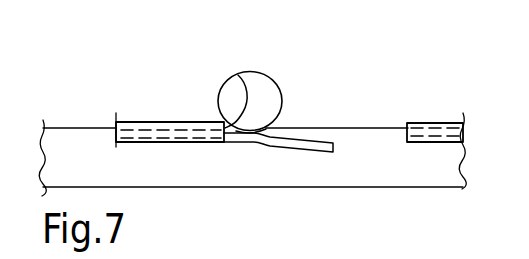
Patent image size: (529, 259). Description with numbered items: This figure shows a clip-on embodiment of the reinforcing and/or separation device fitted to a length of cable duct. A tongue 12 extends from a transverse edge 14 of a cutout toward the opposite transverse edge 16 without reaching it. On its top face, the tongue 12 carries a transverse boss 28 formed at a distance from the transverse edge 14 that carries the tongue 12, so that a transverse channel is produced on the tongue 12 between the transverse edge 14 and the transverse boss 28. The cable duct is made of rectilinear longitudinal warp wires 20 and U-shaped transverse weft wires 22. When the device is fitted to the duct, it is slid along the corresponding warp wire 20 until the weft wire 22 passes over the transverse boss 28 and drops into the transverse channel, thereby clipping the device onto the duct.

The tongue 12 is at (292, 137).
The transverse edge 14 is at (238, 75).
The opposite transverse edge 16 is at (407, 133).
The warp wire 20 is at (357, 140).
The weft wire 22 is at (258, 93).
The transverse boss 28 is at (275, 127).